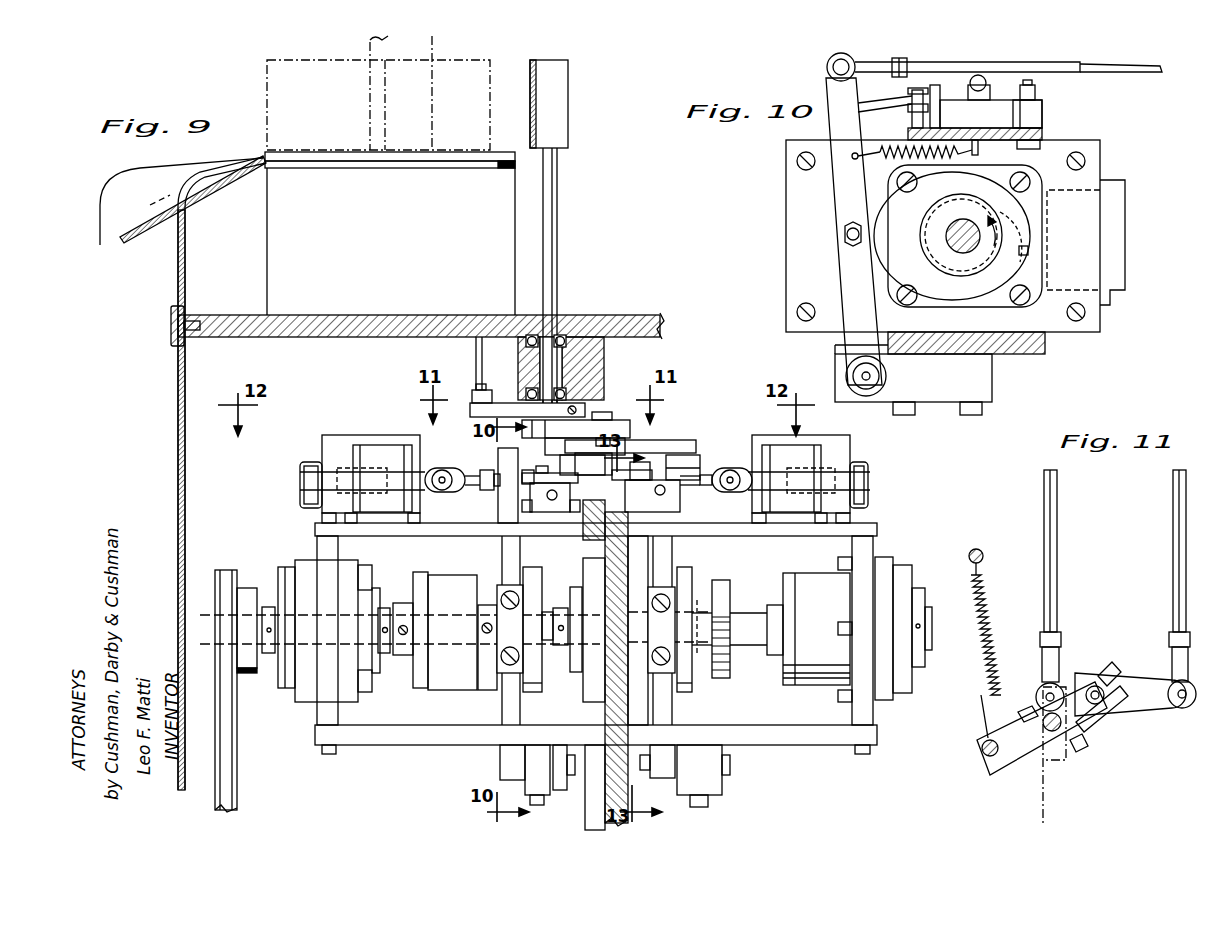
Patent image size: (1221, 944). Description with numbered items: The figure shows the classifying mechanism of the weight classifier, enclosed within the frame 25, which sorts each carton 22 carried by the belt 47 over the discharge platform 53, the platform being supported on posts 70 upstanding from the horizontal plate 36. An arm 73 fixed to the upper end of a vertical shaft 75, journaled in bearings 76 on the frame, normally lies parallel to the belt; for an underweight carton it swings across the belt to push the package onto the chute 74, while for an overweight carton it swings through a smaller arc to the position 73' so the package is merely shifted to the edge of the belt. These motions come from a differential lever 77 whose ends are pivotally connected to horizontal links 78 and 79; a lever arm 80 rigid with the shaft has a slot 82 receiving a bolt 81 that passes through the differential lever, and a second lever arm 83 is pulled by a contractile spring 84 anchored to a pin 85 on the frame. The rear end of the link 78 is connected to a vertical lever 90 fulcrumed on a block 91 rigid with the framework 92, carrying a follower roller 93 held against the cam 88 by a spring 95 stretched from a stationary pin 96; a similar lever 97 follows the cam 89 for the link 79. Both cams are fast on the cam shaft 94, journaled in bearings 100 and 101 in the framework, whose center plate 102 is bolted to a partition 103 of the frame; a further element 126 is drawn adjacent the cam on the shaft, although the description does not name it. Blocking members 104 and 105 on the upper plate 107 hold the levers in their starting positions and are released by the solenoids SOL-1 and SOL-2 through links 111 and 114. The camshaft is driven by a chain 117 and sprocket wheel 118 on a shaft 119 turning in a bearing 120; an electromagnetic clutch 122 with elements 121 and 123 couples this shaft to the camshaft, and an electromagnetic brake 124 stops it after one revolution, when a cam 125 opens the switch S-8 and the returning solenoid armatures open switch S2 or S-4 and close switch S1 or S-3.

In FIG. 9, the carton 22 is at (368, 48).
In FIG. 9, the position of arm for overweight carton 73' is at (361, 105).
In FIG. 9, the arm 73 is at (534, 104).
In FIG. 11, the arm 73 is at (1034, 756).
In FIG. 9, the vertical shaft 75 is at (558, 226).
In FIG. 11, the vertical shaft 75 is at (1046, 728).
In FIG. 9, the belt 47 is at (438, 153).
In FIG. 9, the discharge platform 53 is at (448, 169).
In FIG. 9, the posts 70 is at (273, 258).
In FIG. 9, the chute 74 is at (160, 222).
In FIG. 9, the frame 25 is at (178, 378).
In FIG. 9, the horizontal plate 36 is at (373, 315).
In FIG. 9, the bearings 76 is at (566, 336).
In FIG. 9, the pin 85 is at (472, 358).
In FIG. 11, the pin 85 is at (984, 556).
In FIG. 9, the contractile spring 84 is at (476, 398).
In FIG. 11, the contractile spring 84 is at (988, 640).
In FIG. 9, the second lever arm 83 is at (474, 409).
In FIG. 11, the second lever arm 83 is at (1008, 760).
In FIG. 9, the lever arm 80 is at (632, 431).
In FIG. 11, the lever arm 80 is at (1100, 716).
In FIG. 9, the bolt 81 is at (604, 419).
In FIG. 11, the bolt 81 is at (1092, 686).
In FIG. 11, the slot 82 is at (1118, 670).
In FIG. 9, the differential lever 77 is at (686, 441).
In FIG. 11, the differential lever 77 is at (1152, 680).
In FIG. 9, the link 78 is at (540, 478).
In FIG. 10, the link 78 is at (1058, 54).
In FIG. 11, the link 78 is at (1058, 583).
In FIG. 9, the link 79 is at (700, 473).
In FIG. 10, the link 79 is at (1142, 70).
In FIG. 11, the link 79 is at (1173, 520).
In FIG. 9, the solenoid SOL-1 is at (392, 434).
In FIG. 9, the solenoid SOL-2 is at (800, 448).
In FIG. 9, the switch S1 is at (290, 481).
In FIG. 9, the switch S2 is at (296, 487).
In FIG. 9, the switch S-3 is at (880, 482).
In FIG. 9, the switch S-4 is at (872, 487).
In FIG. 10, the switch S-8 is at (1125, 236).
In FIG. 9, the link 111 is at (462, 494).
In FIG. 9, the link 114 is at (712, 488).
In FIG. 9, the upper plate 107 is at (462, 532).
In FIG. 9, the blocking member 104 is at (545, 512).
In FIG. 9, the blocking member 105 is at (662, 513).
In FIG. 9, the partition 103 is at (607, 524).
In FIG. 9, the bearing 120 is at (297, 570).
In FIG. 9, the shaft 119 is at (264, 607).
In FIG. 9, the clutch element 121 is at (414, 576).
In FIG. 9, the electromagnetic clutch 122 is at (425, 692).
In FIG. 9, the clutch element 123 is at (480, 608).
In FIG. 9, the vertical lever 90 is at (506, 551).
In FIG. 10, the vertical lever 90 is at (838, 205).
In FIG. 9, the cam 88 is at (572, 572).
In FIG. 10, the cam 88 is at (888, 260).
In FIG. 9, the lever 97 is at (668, 574).
In FIG. 9, the cam 89 is at (690, 584).
In FIG. 9, the electromagnetic brake 124 is at (806, 580).
In FIG. 9, the cam 125 is at (730, 600).
In FIG. 10, the cam 125 is at (994, 274).
In FIG. 9, the cam shaft 94 is at (748, 640).
In FIG. 10, the cam shaft 94 is at (960, 226).
In FIG. 10, the stop 126 is at (1020, 257).
In FIG. 9, the bearing 101 is at (888, 565).
In FIG. 9, the bearing 100 is at (574, 692).
In FIG. 9, the center plate 102 is at (618, 714).
In FIG. 10, the center plate 102 is at (796, 272).
In FIG. 9, the chain 117 is at (230, 790).
In FIG. 9, the sprocket wheel 118 is at (244, 676).
In FIG. 9, the framework 92 is at (396, 752).
In FIG. 10, the framework 92 is at (1062, 322).
In FIG. 9, the block 91 is at (570, 780).
In FIG. 10, the block 91 is at (950, 398).
In FIG. 10, the follower roller 93 is at (838, 240).
In FIG. 10, the contractile spring 95 is at (895, 143).
In FIG. 10, the stationary pin 96 is at (980, 149).